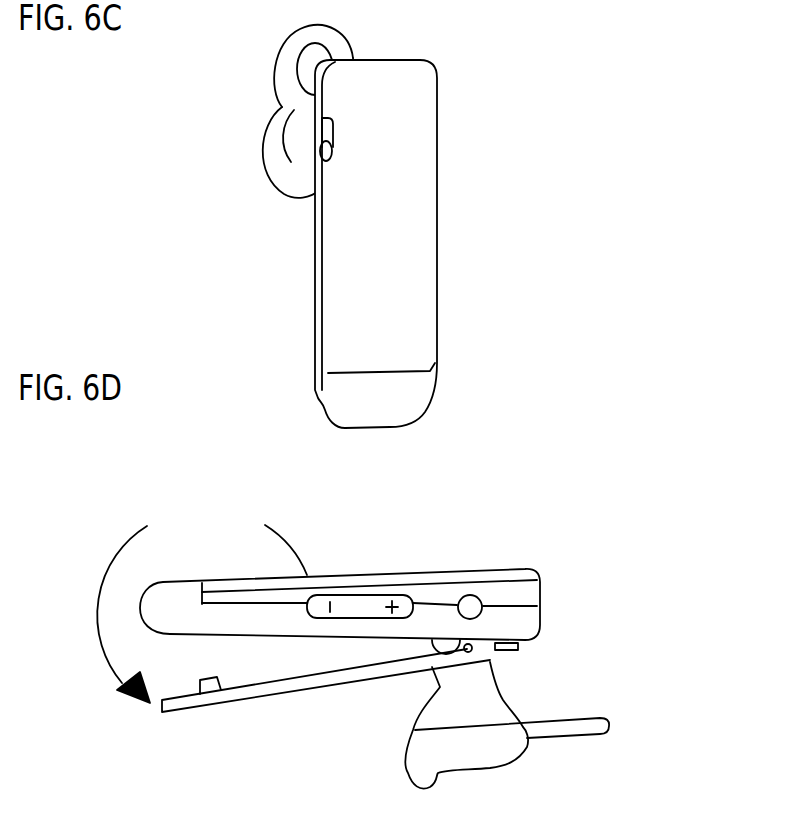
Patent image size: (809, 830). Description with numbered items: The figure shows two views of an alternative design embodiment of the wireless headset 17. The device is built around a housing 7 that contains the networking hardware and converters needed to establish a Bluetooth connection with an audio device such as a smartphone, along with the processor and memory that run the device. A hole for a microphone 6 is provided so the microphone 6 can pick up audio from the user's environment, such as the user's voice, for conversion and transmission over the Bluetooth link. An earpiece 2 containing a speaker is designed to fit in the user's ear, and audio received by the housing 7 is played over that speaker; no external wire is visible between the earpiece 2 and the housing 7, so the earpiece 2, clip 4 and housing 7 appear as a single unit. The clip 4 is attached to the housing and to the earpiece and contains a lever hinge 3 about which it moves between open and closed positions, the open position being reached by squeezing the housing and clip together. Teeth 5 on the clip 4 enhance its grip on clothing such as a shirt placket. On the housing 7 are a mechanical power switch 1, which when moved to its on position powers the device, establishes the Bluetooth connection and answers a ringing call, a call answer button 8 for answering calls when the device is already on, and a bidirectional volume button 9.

In FIG. 6C, the mechanical power switch 1 is at (332, 150).
In FIG. 6C, the earpiece 2 is at (300, 138).
In FIG. 6D, the earpiece 2 is at (480, 705).
In FIG. 6D, the lever hinge 3 is at (470, 648).
In FIG. 6D, the clip 4 is at (366, 665).
In FIG. 6D, the teeth 5 is at (215, 686).
In FIG. 6D, the microphone 6 is at (192, 617).
In FIG. 6C, the housing 7 is at (408, 298).
In FIG. 6D, the housing 7 is at (278, 575).
In FIG. 6D, the call answer button 8 is at (480, 598).
In FIG. 6D, the bidirectional volume button 9 is at (367, 605).
In FIG. 6C, the wireless headset 17 is at (568, 172).
In FIG. 6D, the wireless headset 17 is at (685, 592).